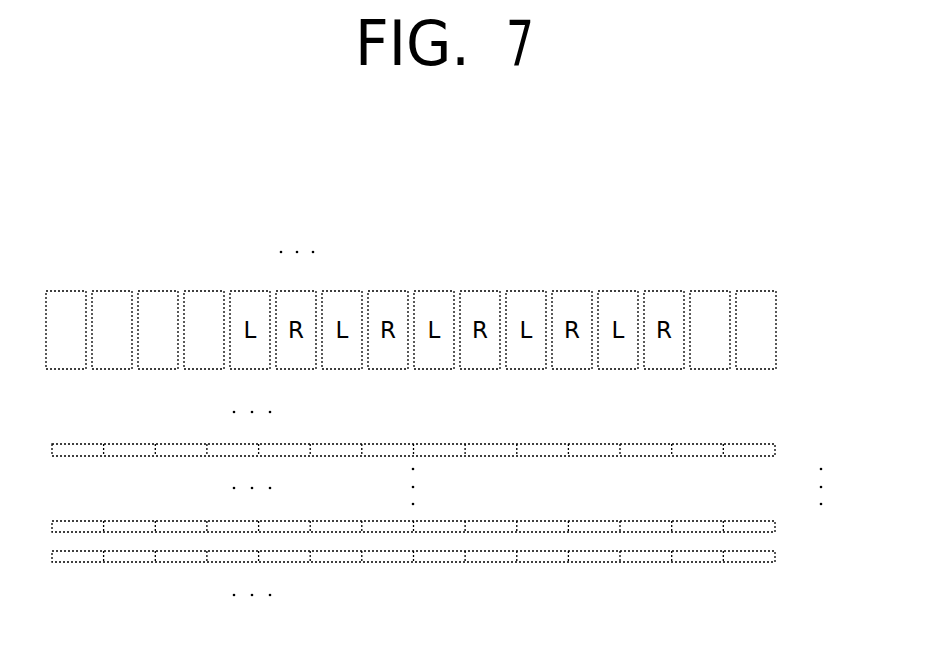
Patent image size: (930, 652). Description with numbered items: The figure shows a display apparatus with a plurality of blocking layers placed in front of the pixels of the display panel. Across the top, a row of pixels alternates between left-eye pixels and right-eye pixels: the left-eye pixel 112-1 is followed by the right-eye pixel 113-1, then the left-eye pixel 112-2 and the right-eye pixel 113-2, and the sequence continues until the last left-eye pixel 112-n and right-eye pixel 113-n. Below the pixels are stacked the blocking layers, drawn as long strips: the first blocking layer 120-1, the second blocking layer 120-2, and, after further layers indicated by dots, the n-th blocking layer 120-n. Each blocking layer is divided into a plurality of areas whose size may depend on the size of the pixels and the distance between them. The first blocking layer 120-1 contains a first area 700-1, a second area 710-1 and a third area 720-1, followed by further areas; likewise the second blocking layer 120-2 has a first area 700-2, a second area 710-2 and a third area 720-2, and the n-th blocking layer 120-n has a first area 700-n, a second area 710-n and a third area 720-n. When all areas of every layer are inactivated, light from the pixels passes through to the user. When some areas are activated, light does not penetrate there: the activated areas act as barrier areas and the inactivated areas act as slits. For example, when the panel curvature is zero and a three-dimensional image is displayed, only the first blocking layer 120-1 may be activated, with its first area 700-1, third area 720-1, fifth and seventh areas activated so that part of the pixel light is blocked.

The left-eye pixel 112-1 is at (55, 291).
The right-eye pixel 113-1 is at (108, 291).
The left-eye pixel 112-2 is at (168, 291).
The right-eye pixel 113-2 is at (212, 291).
The left-eye pixel 112-n is at (698, 291).
The right-eye pixel 113-n is at (765, 291).
The blocking layer 120-n is at (436, 431).
The blocking layer 120-2 is at (436, 507).
The first blocking layer 120-1 is at (436, 576).
The first area 700-n is at (67, 444).
The second area 710-n is at (135, 444).
The third area 720-n is at (202, 444).
The first area 700-2 is at (67, 521).
The second area 710-2 is at (135, 521).
The third area 720-2 is at (202, 521).
The first area 700-1 is at (67, 562).
The second area 710-1 is at (135, 562).
The third area 720-1 is at (202, 562).